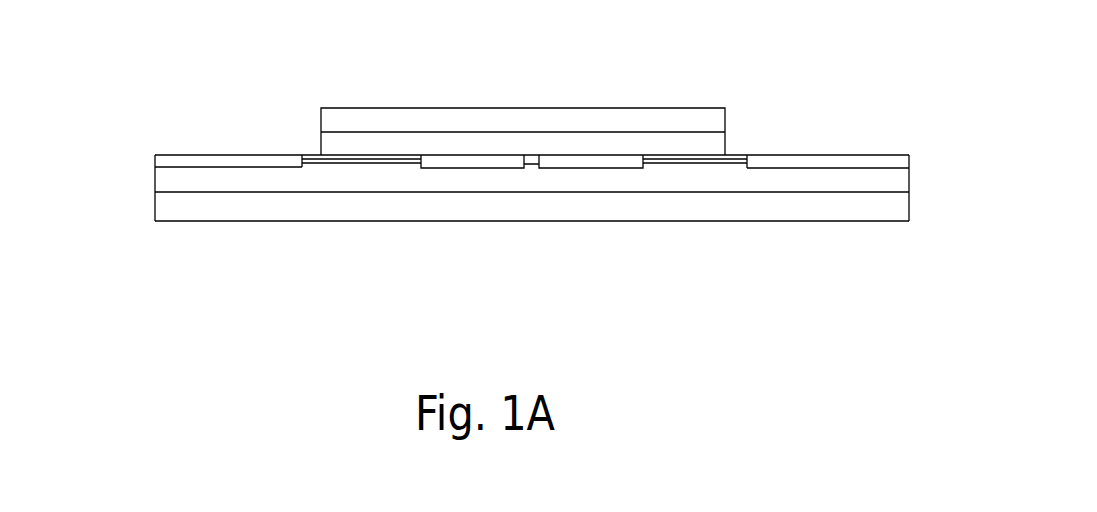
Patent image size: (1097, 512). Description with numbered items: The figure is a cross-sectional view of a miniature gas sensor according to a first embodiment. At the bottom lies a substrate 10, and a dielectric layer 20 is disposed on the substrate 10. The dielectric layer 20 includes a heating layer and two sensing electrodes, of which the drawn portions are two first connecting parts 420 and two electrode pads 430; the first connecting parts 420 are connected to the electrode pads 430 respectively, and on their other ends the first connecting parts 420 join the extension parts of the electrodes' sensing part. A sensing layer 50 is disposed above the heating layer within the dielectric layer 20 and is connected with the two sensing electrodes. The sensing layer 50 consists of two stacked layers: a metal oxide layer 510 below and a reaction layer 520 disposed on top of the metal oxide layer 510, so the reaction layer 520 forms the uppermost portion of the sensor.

The substrate 10 is at (170, 213).
The dielectric layer 20 is at (170, 190).
The sensing layer 50 is at (640, 99).
The first connecting parts 420 is at (477, 167).
The electrode pads 430 is at (293, 162).
The metal oxide layer 510 is at (718, 143).
The reaction layer 520 is at (710, 117).